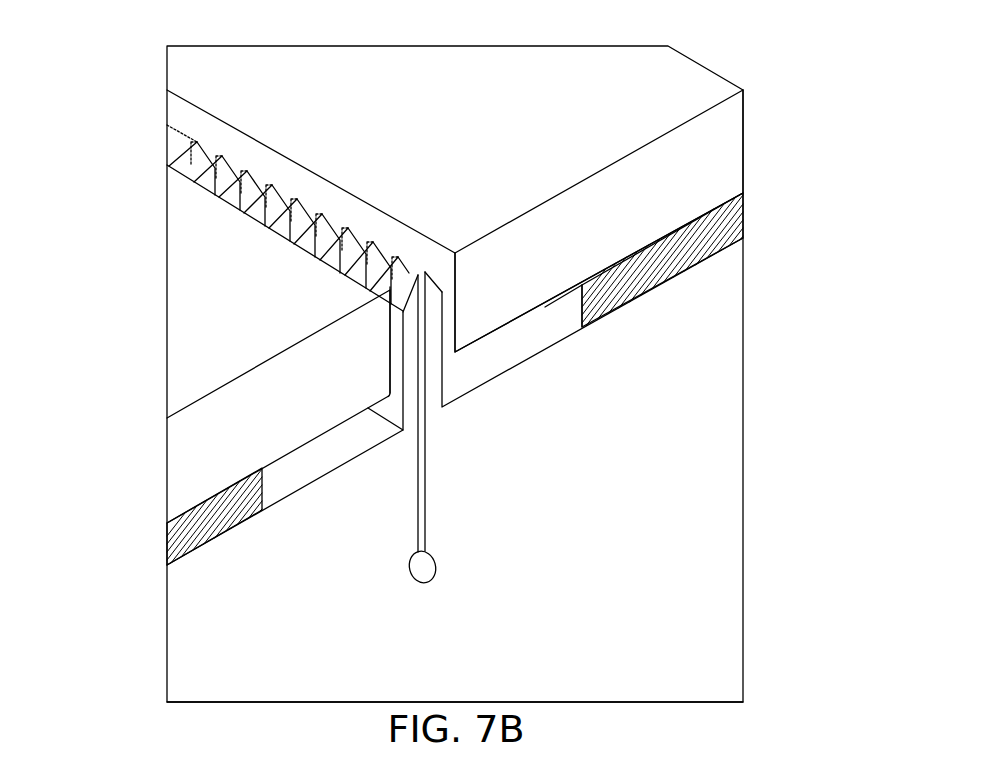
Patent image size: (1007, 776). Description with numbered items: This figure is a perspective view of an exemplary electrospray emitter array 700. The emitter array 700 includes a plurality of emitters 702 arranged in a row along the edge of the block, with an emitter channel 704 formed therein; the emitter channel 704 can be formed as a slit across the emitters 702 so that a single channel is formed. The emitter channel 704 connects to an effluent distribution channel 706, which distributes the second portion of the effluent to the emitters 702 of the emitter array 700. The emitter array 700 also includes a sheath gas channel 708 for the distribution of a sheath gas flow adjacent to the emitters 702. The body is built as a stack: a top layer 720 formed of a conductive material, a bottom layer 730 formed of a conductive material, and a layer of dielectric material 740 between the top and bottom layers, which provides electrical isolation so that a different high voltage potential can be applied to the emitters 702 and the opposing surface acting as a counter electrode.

The emitter array 700 is at (752, 132).
The emitters 702 is at (317, 232).
The emitter channel 704 is at (442, 440).
The effluent distribution channel 706 is at (428, 553).
The sheath gas channel 708 is at (520, 340).
The top layer 720 is at (647, 208).
The bottom layer 730 is at (667, 575).
The layer of dielectric material 740 is at (677, 255).